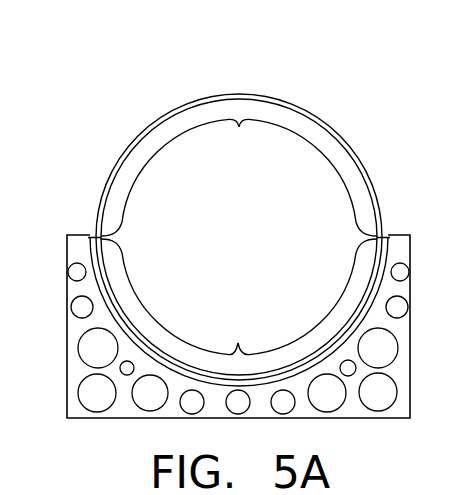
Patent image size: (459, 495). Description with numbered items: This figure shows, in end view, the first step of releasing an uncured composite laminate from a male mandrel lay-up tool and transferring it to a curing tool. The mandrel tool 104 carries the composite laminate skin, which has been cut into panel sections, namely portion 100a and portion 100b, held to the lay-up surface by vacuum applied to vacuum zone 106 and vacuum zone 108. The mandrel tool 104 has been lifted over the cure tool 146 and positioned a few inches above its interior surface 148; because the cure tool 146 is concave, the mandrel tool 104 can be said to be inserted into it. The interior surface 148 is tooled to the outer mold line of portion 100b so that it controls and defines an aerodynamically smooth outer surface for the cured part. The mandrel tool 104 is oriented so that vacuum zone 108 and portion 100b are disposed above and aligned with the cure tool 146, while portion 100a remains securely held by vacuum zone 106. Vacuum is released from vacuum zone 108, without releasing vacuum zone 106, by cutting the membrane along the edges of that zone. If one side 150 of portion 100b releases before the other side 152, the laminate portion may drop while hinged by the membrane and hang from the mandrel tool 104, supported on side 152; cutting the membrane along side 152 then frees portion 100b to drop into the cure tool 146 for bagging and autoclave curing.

The mandrel tool 104 is at (163, 78).
The portion of composite laminate skin 100a is at (246, 94).
The portion of composite laminate skin 100b is at (133, 324).
The vacuum zone 106 is at (239, 127).
The vacuum zone 108 is at (238, 343).
The interior surface 148 is at (99, 274).
The side of portion 100b 150 is at (383, 236).
The side of portion 100b 152 is at (95, 236).
The cure tool 146 is at (63, 380).